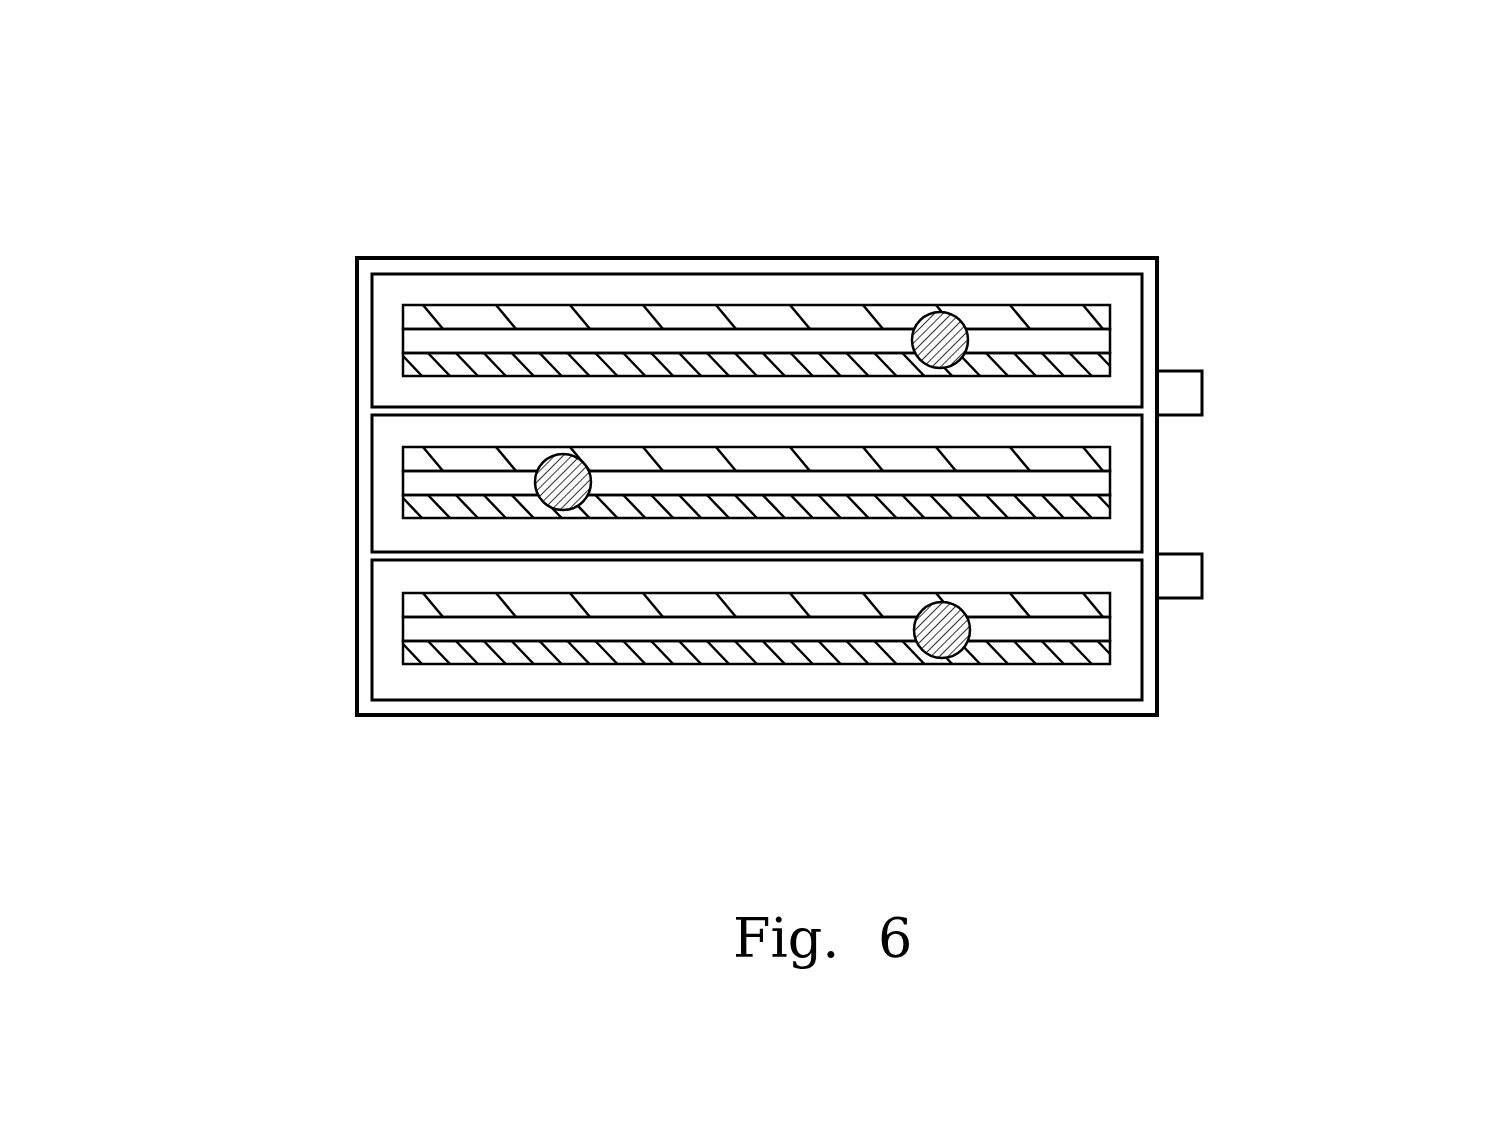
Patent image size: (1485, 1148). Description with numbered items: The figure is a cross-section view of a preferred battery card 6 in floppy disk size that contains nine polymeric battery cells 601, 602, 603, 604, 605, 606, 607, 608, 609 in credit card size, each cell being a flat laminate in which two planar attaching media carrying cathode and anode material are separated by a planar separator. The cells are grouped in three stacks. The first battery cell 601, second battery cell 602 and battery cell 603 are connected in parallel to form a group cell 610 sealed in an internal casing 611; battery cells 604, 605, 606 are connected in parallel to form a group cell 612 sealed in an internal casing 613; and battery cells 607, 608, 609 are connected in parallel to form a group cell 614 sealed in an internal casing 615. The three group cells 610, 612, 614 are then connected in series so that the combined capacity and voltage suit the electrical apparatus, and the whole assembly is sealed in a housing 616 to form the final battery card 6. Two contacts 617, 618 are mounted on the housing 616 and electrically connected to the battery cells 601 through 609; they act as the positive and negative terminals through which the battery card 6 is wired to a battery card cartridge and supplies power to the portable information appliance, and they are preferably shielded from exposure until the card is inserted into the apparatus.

The battery card 6 is at (1398, 192).
The first battery cell 601 is at (1050, 318).
The second battery cell 602 is at (1053, 343).
The battery cell 603 is at (1055, 368).
The battery cell 604 is at (457, 455).
The battery cell 605 is at (457, 480).
The battery cell 606 is at (457, 512).
The battery cell 607 is at (1057, 600).
The battery cell 608 is at (1057, 628).
The battery cell 609 is at (1053, 655).
The group cell 610 is at (925, 318).
The internal casing 611 is at (537, 292).
The group cell 612 is at (545, 505).
The internal casing 613 is at (1122, 498).
The group cell 614 is at (925, 665).
The internal casing 615 is at (967, 682).
The housing 616 is at (725, 267).
The contact 617 is at (1177, 402).
The contact 618 is at (1175, 583).